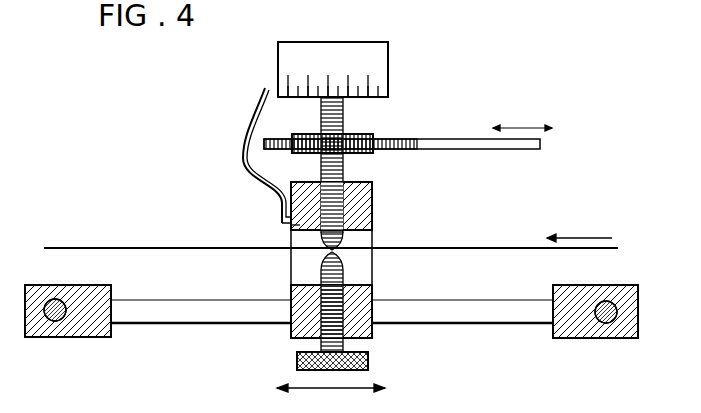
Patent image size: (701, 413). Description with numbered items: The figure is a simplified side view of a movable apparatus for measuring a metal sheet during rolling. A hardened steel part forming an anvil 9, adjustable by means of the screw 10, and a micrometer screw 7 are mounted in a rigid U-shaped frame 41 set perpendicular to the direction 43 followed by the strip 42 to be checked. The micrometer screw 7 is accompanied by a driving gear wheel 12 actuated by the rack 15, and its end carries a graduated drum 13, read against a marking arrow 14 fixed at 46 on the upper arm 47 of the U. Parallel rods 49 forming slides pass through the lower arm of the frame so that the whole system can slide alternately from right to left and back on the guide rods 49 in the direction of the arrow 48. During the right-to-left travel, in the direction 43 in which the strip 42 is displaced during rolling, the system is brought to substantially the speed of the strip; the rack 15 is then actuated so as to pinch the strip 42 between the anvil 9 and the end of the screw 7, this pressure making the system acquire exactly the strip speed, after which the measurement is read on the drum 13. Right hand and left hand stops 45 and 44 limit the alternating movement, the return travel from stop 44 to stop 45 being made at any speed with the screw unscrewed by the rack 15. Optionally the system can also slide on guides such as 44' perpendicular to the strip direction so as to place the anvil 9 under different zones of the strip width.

The micrometer screw 7 is at (334, 165).
The anvil 9 is at (343, 272).
The screw 10 is at (343, 337).
The driving gear wheel 12 is at (270, 141).
The graduated drum 13 is at (373, 56).
The marking arrow 14 is at (247, 172).
The rack 15 is at (396, 138).
The U-shaped frame 41 is at (292, 275).
The strip 42 is at (79, 247).
The direction of strip displacement 43 is at (579, 229).
The left hand stop 44 is at (77, 334).
The guide 44' is at (47, 345).
The right hand stop 45 is at (610, 322).
The fixing point of marking arrow 46 is at (286, 213).
The upper arm 47 is at (300, 226).
The direction of alternating movement 48 is at (331, 398).
The guide rods 49 is at (487, 313).